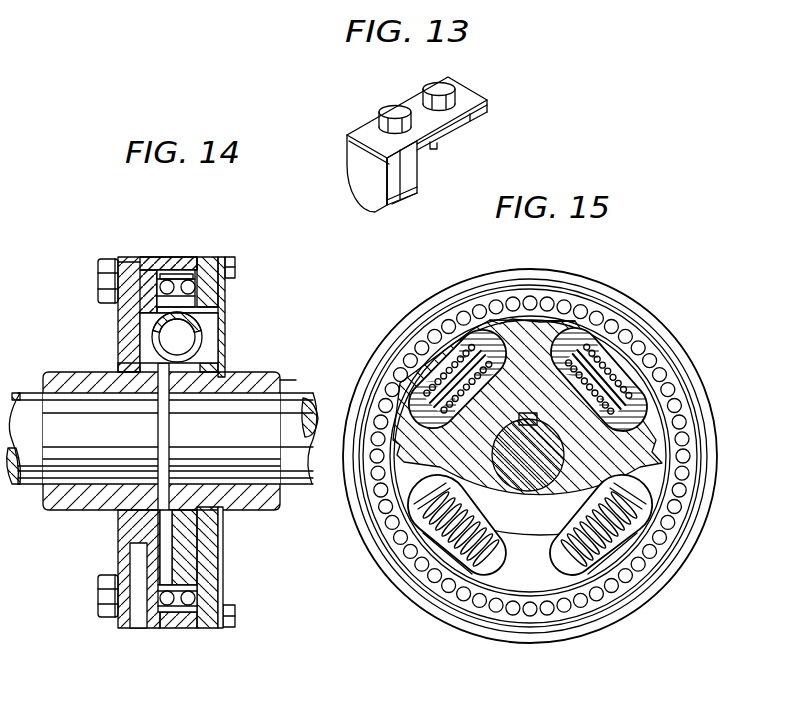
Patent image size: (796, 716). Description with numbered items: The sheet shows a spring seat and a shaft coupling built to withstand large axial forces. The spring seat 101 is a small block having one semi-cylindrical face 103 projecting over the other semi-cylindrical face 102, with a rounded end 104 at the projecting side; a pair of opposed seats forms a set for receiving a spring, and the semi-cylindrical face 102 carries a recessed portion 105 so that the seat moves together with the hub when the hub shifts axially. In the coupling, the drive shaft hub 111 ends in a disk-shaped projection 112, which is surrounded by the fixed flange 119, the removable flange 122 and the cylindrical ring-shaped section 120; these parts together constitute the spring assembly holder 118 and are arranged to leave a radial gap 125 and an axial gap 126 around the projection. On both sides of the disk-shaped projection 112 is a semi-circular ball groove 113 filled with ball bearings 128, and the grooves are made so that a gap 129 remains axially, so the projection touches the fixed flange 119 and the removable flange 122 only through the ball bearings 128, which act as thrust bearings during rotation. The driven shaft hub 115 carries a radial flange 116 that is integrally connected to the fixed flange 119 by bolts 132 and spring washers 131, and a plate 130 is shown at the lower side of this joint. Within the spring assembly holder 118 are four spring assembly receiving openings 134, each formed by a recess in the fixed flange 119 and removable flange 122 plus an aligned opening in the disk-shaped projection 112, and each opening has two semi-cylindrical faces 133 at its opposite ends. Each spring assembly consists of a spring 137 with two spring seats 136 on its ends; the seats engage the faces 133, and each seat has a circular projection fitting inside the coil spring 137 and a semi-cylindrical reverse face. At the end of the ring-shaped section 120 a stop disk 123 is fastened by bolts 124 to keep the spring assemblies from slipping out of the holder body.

In FIG. 13, the spring seat 101 is at (468, 81).
In FIG. 13, the semi-cylindrical face 102 is at (470, 127).
In FIG. 13, the projecting semi-cylindrical face 103 is at (394, 201).
In FIG. 13, the rounded clip head 104 is at (357, 168).
In FIG. 13, the recessed portion 105 is at (434, 150).
In FIG. 14, the drive shaft hub 111 is at (292, 389).
In FIG. 15, the drive shaft hub 111 is at (525, 520).
In FIG. 14, the disk-shaped projection 112 is at (191, 277).
In FIG. 15, the disk-shaped projection 112 is at (557, 323).
In FIG. 14, the ball groove 113 is at (209, 261).
In FIG. 15, the ball groove 113 is at (630, 579).
In FIG. 14, the driven shaft hub 115 is at (74, 370).
In FIG. 14, the radial flange 116 is at (118, 333).
In FIG. 14, the spring assembly holder 118 is at (147, 293).
In FIG. 14, the fixed flange 119 is at (156, 280).
In FIG. 15, the fixed flange 119 is at (483, 583).
In FIG. 14, the ring-shaped section 120 is at (163, 260).
In FIG. 15, the ring-shaped section 120 is at (418, 605).
In FIG. 14, the removable flange 122 is at (226, 300).
In FIG. 14, the stop disk 123 is at (272, 375).
In FIG. 14, the bolts 124 is at (233, 266).
In FIG. 14, the radial gap 125 is at (195, 283).
In FIG. 15, the radial gap 125 is at (523, 287).
In FIG. 14, the axial gap 126 is at (222, 326).
In FIG. 14, the ball bearings 128 is at (228, 290).
In FIG. 15, the ball bearings 128 is at (686, 425).
In FIG. 14, the gap 129 is at (171, 613).
In FIG. 14, the plate 130 is at (139, 628).
In FIG. 14, the spring washers 131 is at (117, 259).
In FIG. 14, the bolts 132 is at (98, 283).
In FIG. 15, the semi-cylindrical faces 133 is at (652, 408).
In FIG. 15, the spring assembly receiving openings 134 is at (617, 347).
In FIG. 14, the spring seats 136 is at (272, 385).
In FIG. 15, the spring seats 136 is at (573, 346).
In FIG. 14, the spring 137 is at (204, 342).
In FIG. 15, the spring 137 is at (640, 353).